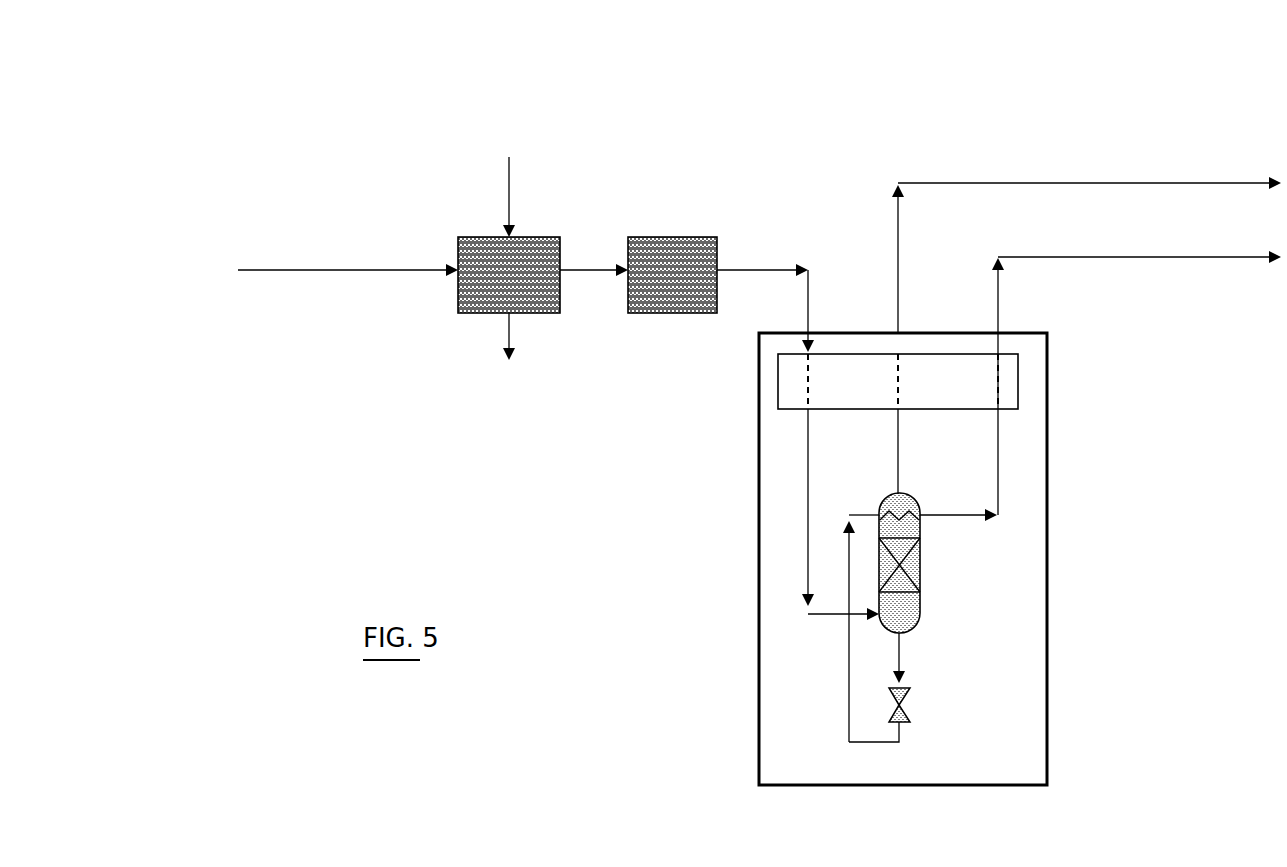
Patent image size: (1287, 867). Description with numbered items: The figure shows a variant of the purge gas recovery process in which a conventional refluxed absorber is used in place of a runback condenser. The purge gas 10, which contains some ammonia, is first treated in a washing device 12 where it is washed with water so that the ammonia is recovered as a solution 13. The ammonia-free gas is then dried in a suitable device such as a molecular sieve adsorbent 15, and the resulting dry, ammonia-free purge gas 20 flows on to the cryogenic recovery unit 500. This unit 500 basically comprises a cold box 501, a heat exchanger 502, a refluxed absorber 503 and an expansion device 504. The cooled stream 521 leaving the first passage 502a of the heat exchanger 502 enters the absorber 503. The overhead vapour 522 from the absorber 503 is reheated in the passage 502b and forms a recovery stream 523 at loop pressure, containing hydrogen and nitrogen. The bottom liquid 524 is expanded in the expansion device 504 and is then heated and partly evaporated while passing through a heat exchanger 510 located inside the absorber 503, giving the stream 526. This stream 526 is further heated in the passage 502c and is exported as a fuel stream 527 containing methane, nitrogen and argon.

The purge gas 10 is at (325, 266).
The washing device 12 is at (540, 242).
The solution 13 is at (510, 333).
The molecular sieve adsorbent 15 is at (692, 240).
The dry, ammonia-free purge gas 20 is at (762, 264).
The unit 500 is at (1084, 466).
The cold box 501 is at (758, 541).
The heat exchanger 502 is at (779, 385).
The first passage 502a is at (812, 380).
The passage 502b is at (902, 378).
The passage 502c is at (998, 380).
The refluxed absorber 503 is at (920, 604).
The expansion device 504 is at (910, 712).
The heat exchanger 510 is at (904, 510).
The cooled stream 521 is at (808, 468).
The overhead vapour 522 is at (898, 437).
The recovery stream 523 is at (1098, 180).
The bottom liquid 524 is at (901, 652).
The stream 526 is at (960, 520).
The fuel stream 527 is at (1146, 258).